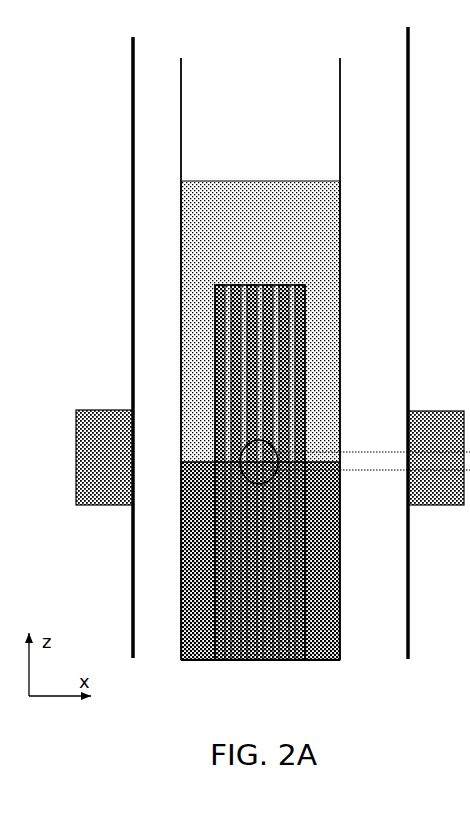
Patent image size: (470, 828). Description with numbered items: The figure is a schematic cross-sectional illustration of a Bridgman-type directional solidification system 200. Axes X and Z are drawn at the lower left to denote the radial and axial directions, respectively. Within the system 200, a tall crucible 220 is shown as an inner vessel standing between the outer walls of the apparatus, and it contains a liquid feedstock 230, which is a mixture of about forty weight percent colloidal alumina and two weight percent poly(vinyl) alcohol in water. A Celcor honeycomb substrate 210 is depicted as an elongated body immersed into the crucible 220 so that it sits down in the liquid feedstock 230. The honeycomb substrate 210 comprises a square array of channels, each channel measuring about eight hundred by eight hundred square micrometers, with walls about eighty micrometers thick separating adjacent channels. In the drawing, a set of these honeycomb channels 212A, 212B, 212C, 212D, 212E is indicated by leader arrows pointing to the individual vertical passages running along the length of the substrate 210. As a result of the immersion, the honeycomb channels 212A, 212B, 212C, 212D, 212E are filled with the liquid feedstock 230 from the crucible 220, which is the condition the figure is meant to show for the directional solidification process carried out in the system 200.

The Bridgman-type directional solidification system 200 is at (100, 108).
The honeycomb substrate 210 is at (262, 387).
The honeycomb channel 212A is at (228, 280).
The honeycomb channel 212B is at (248, 280).
The honeycomb channel 212C is at (267, 280).
The honeycomb channel 212D is at (283, 280).
The honeycomb channel 212E is at (300, 280).
The crucible 220 is at (173, 383).
The liquid feedstock 230 is at (250, 222).